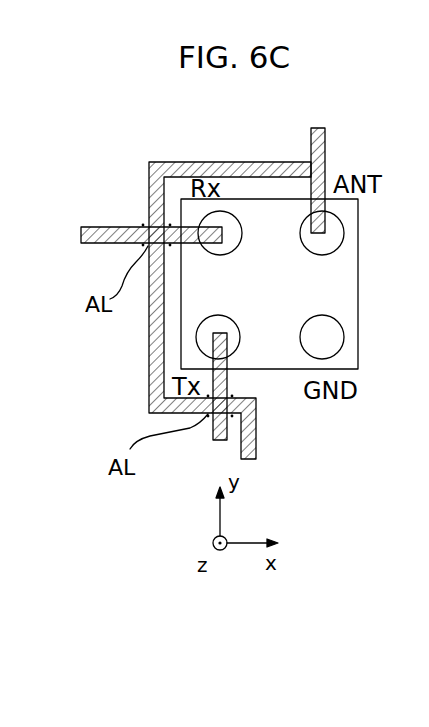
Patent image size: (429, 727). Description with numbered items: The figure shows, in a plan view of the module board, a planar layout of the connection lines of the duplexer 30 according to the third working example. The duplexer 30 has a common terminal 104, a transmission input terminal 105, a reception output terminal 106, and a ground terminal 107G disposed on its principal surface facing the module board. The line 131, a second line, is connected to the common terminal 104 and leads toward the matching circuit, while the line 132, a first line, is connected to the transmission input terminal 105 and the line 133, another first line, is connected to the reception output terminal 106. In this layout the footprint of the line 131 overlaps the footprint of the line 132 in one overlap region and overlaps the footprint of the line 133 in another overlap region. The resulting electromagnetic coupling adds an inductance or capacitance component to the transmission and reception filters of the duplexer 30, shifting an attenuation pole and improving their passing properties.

The line 131 is at (206, 172).
The duplexer 30 is at (258, 198).
The line 133 is at (132, 227).
The line 132 is at (214, 424).
The reception output terminal 106 is at (242, 262).
The common terminal 104 is at (303, 248).
The transmission input terminal 105 is at (242, 309).
The ground terminal 107G is at (302, 322).